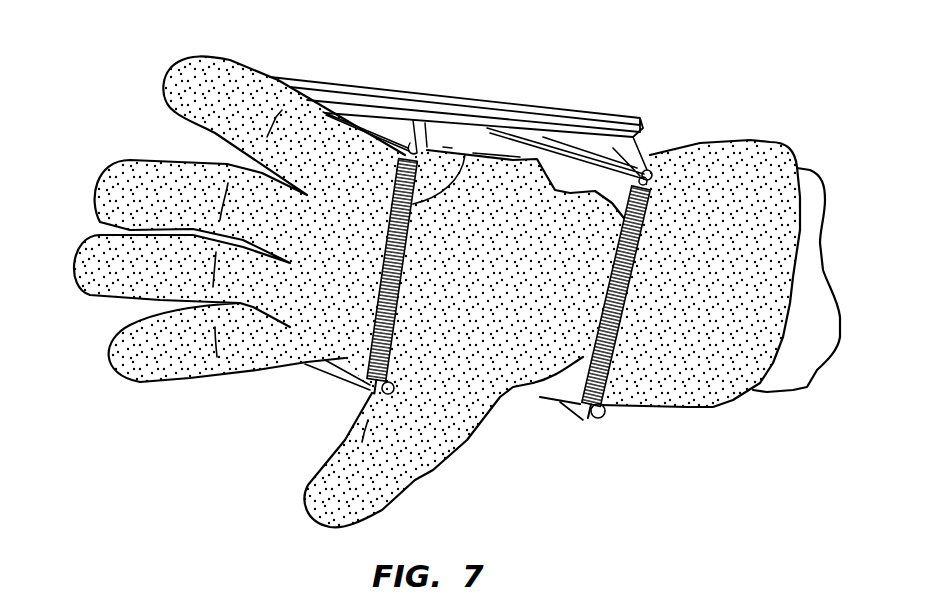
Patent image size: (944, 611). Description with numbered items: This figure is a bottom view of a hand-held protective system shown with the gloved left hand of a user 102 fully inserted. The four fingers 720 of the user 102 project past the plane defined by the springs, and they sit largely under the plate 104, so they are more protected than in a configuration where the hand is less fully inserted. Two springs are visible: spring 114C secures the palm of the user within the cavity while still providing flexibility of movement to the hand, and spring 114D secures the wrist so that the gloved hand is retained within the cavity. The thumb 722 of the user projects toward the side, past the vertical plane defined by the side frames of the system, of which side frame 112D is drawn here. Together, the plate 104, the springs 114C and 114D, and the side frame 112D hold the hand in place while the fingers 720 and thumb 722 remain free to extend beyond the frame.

The plate 104 is at (383, 90).
The spring 114C is at (465, 155).
The side frame 112D is at (587, 152).
The four fingers 720 is at (730, 90).
The user 102 is at (812, 190).
The spring 114D is at (605, 375).
The thumb 722 is at (430, 467).